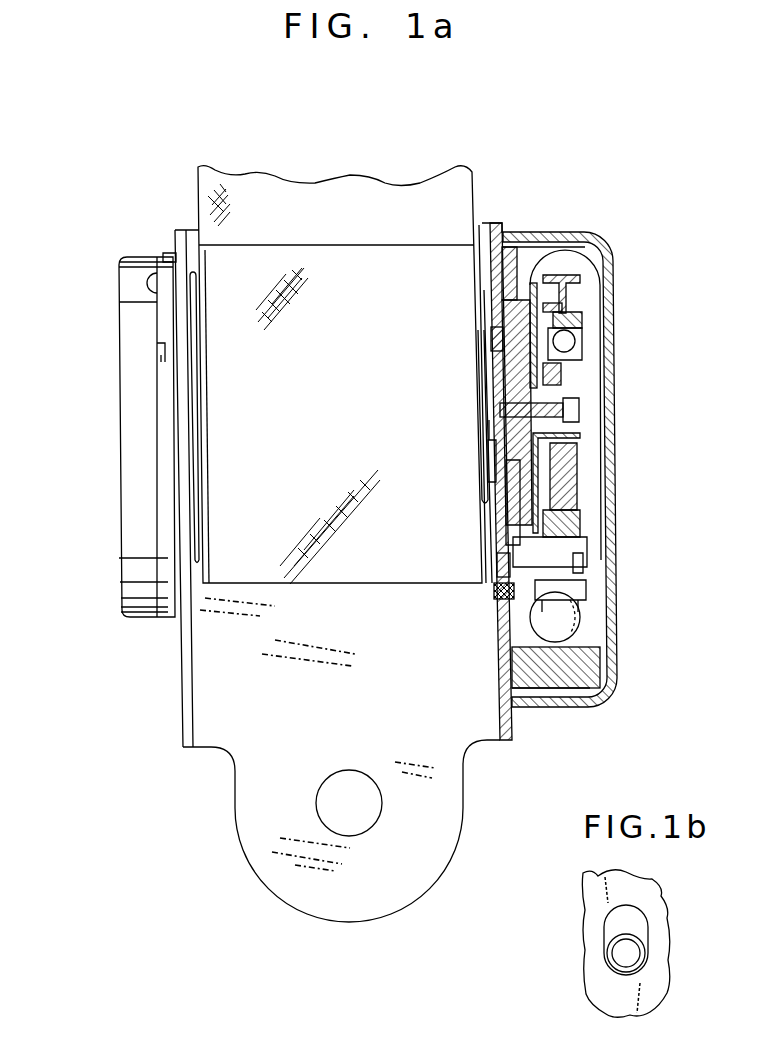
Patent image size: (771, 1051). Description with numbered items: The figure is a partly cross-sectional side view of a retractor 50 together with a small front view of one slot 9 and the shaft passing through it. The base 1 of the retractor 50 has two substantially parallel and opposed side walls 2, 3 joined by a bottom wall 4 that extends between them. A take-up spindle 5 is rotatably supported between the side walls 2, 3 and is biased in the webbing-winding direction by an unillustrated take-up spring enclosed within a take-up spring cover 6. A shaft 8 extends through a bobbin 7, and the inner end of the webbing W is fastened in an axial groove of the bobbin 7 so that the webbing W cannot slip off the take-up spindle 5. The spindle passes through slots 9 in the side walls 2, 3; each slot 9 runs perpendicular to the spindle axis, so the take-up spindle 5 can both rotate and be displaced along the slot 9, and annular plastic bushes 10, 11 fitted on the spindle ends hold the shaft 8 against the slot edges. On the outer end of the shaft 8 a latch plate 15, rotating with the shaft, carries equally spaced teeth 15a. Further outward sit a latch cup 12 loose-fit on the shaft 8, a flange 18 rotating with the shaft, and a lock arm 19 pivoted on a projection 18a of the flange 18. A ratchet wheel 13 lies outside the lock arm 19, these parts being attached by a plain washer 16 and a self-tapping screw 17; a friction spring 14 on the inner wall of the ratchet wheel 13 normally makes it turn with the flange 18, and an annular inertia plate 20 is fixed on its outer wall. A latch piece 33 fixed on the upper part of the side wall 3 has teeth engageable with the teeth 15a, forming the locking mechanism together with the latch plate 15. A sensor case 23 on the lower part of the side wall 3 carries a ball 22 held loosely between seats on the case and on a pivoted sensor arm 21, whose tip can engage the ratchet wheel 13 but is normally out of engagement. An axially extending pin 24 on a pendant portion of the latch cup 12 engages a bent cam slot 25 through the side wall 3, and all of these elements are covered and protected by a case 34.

In FIG. 1a, the webbing W is at (254, 196).
In FIG. 1a, the base 1 is at (470, 806).
In FIG. 1a, the side wall 2 is at (182, 728).
In FIG. 1a, the side wall 3 is at (506, 715).
In FIG. 1b, the side wall 3 is at (655, 998).
In FIG. 1a, the bottom wall 4 is at (248, 748).
In FIG. 1a, the take-up spindle 5 is at (186, 472).
In FIG. 1a, the take-up spring cover 6 is at (152, 590).
In FIG. 1a, the bobbin 7 is at (498, 272).
In FIG. 1a, the shaft 8 is at (482, 408).
In FIG. 1b, the shaft 8 is at (633, 951).
In FIG. 1a, the slot 9 is at (494, 332).
In FIG. 1b, the slot 9 is at (606, 912).
In FIG. 1a, the annular plastic bush 10 is at (190, 400).
In FIG. 1a, the annular plastic bush 11 is at (492, 452).
In FIG. 1b, the annular plastic bush 11 is at (618, 970).
In FIG. 1a, the latch cup 12 is at (544, 242).
In FIG. 1a, the ratchet wheel 13 is at (580, 280).
In FIG. 1a, the friction spring 14 is at (572, 352).
In FIG. 1a, the latch plate 15 is at (512, 372).
In FIG. 1a, the teeth 15a is at (514, 514).
In FIG. 1a, the plain washer 16 is at (580, 372).
In FIG. 1a, the self-tapping screw 17 is at (582, 410).
In FIG. 1a, the flange 18 is at (585, 442).
In FIG. 1a, the projection 18a is at (582, 480).
In FIG. 1a, the lock arm 19 is at (586, 512).
In FIG. 1a, the inertia plate 20 is at (585, 545).
In FIG. 1a, the sensor arm 21 is at (580, 590).
In FIG. 1a, the ball 22 is at (585, 628).
In FIG. 1a, the sensor case 23 is at (590, 708).
In FIG. 1a, the pin 24 is at (500, 588).
In FIG. 1a, the cam slot 25 is at (500, 566).
In FIG. 1a, the latch piece 33 is at (512, 232).
In FIG. 1a, the case 34 is at (612, 666).
In FIG. 1a, the retractor 50 is at (666, 470).